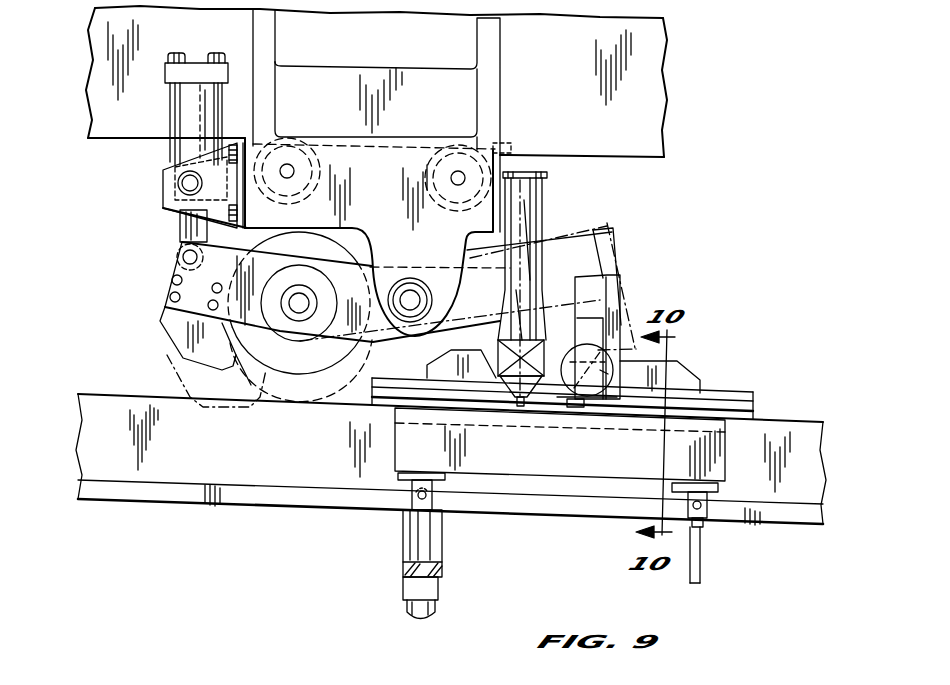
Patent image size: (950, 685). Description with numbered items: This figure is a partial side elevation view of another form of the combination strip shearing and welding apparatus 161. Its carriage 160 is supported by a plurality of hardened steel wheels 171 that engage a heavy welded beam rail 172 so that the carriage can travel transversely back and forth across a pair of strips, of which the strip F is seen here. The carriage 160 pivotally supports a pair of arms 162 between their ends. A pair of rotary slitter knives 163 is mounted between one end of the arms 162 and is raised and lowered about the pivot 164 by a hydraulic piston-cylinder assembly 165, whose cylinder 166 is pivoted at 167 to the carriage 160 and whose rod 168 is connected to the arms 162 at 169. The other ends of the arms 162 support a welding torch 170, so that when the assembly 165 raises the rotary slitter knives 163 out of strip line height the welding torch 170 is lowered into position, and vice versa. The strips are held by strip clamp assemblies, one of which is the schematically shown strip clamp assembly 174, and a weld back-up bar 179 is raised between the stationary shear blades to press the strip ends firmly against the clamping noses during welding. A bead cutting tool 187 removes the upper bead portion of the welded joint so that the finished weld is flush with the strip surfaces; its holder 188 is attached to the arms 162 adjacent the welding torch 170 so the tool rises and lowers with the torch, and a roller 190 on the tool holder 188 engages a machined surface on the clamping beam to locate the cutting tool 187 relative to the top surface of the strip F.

The carriage 160 is at (503, 85).
The combination strip shearing and welding apparatus 161 is at (155, 180).
The arms 162 is at (173, 286).
The rotary slitter knives 163 is at (321, 317).
The pivot 164 is at (410, 296).
The hydraulic piston-cylinder assembly 165 is at (165, 104).
The cylinder 166 is at (202, 83).
The pivot of cylinder 167 is at (184, 176).
The rod 168 is at (180, 224).
The rod connection 169 is at (184, 255).
The welding torch 170 is at (525, 210).
The hardened steel wheels 171 is at (430, 142).
The welded beam rail 172 is at (650, 62).
The strip clamp assembly 174 is at (700, 355).
The weld back-up bar 179 is at (548, 470).
The bead cutting tool 187 is at (582, 405).
The tool holder 188 is at (620, 286).
The roller 190 is at (612, 377).
The strip F is at (778, 425).